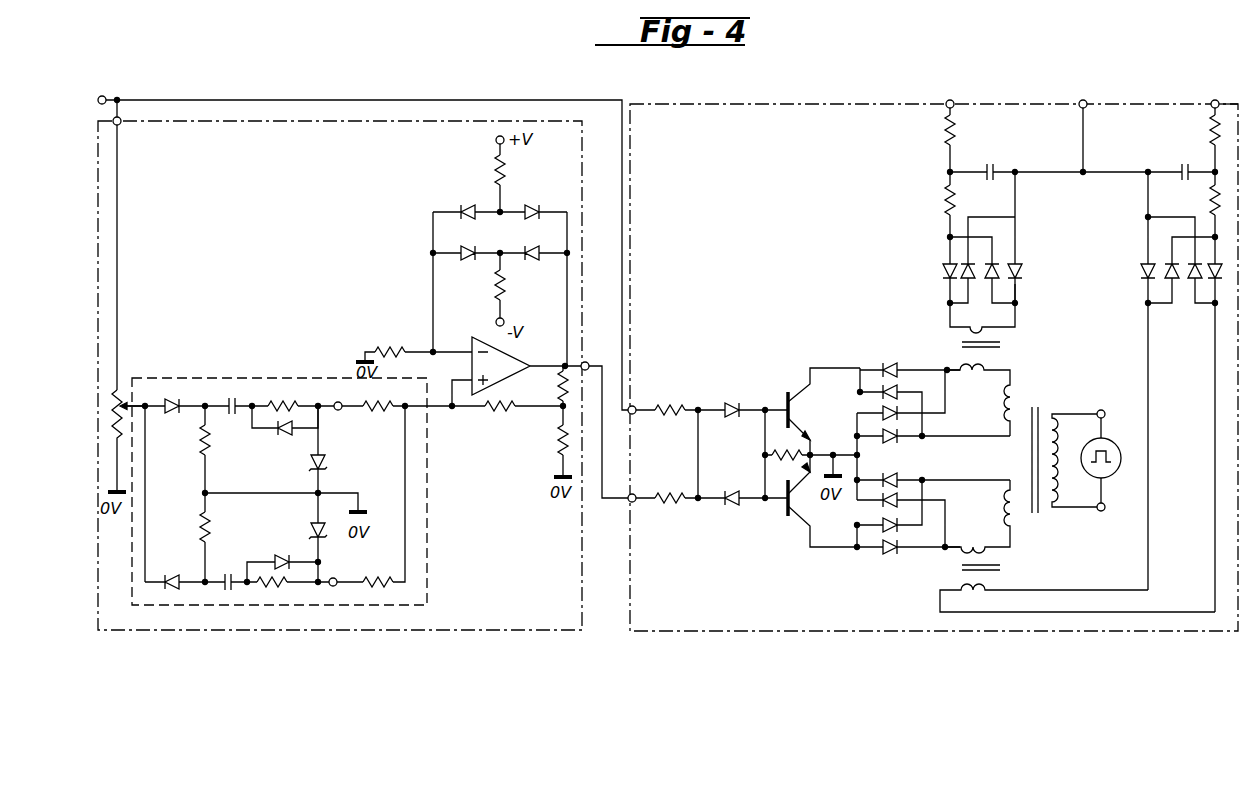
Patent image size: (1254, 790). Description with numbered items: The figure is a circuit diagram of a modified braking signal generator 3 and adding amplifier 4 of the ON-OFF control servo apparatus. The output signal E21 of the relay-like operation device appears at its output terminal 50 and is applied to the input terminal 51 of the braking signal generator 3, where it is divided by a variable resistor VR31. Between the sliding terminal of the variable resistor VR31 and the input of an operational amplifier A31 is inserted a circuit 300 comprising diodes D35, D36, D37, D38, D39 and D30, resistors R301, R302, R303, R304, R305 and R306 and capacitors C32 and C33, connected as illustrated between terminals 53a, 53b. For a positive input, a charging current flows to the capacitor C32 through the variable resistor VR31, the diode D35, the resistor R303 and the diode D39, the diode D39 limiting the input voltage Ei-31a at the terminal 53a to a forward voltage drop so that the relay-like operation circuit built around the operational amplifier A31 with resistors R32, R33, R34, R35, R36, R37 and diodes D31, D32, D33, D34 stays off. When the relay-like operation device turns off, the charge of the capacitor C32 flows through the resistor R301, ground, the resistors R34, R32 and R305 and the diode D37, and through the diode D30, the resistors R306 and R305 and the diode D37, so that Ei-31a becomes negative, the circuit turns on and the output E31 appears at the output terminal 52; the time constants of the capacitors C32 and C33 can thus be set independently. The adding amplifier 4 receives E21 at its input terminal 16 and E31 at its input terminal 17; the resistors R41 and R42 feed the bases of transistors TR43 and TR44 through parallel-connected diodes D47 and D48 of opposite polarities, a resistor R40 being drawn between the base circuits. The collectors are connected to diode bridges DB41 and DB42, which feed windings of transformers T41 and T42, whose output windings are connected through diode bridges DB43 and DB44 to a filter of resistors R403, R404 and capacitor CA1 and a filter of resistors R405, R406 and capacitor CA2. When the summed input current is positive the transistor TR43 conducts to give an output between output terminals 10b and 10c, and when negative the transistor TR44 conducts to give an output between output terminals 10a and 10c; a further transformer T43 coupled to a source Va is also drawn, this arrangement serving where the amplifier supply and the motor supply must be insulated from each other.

The braking signal generator 3 is at (582, 600).
The adding amplifier 4 is at (731, 632).
The circuit 300 is at (427, 537).
The output terminal 50 is at (120, 99).
The input terminal 51 is at (121, 124).
The output terminal 52 is at (587, 362).
The terminal 53a is at (340, 410).
The terminal 53b is at (348, 629).
The input terminal 16 is at (635, 406).
The input terminal 17 is at (635, 494).
The output terminal 10a is at (1219, 94).
The output terminal 10b is at (950, 100).
The output terminal 10c is at (1087, 94).
The input signal E21 is at (111, 88).
The output signal E31 is at (563, 364).
The input voltage Ei-31a is at (373, 427).
The variable resistor VR31 is at (122, 388).
The operational amplifier A31 is at (472, 340).
The resistor R301 is at (181, 459).
The resistor R302 is at (227, 544).
The resistor R303 is at (283, 394).
The resistor R304 is at (292, 605).
The resistor R305 is at (379, 394).
The resistor R306 is at (379, 572).
The resistor R32 is at (498, 420).
The resistor R33 is at (556, 388).
The resistor R34 is at (556, 454).
The resistor R35 is at (388, 348).
The resistor R36 is at (504, 167).
The resistor R37 is at (506, 300).
The capacitor C32 is at (232, 396).
The capacitor C33 is at (218, 576).
The diode D30 is at (324, 534).
The diode D31 is at (466, 204).
The diode D32 is at (470, 262).
The diode D33 is at (534, 204).
The diode D34 is at (534, 262).
The diode D35 is at (172, 420).
The diode D36 is at (172, 569).
The diode D37 is at (285, 431).
The diode D38 is at (280, 553).
The diode D39 is at (310, 466).
The resistor R40 is at (772, 452).
The resistor R41 is at (670, 404).
The resistor R42 is at (670, 504).
The diode D47 is at (732, 403).
The diode D48 is at (732, 504).
The transistor TR43 is at (788, 382).
The transistor TR44 is at (780, 540).
The diode bridge DB41 is at (913, 382).
The diode bridge DB42 is at (913, 542).
The diode bridge DB43 is at (957, 254).
The diode bridge DB44 is at (1185, 330).
The transformer T41 is at (995, 347).
The transformer T42 is at (1004, 569).
The transformer T43 is at (1036, 406).
The AC voltage source Va is at (1111, 478).
The resistor R403 is at (945, 200).
The resistor R404 is at (945, 130).
The resistor R405 is at (1210, 203).
The resistor R406 is at (1210, 133).
The capacitor CA1 is at (996, 164).
The capacitor CA2 is at (1182, 166).